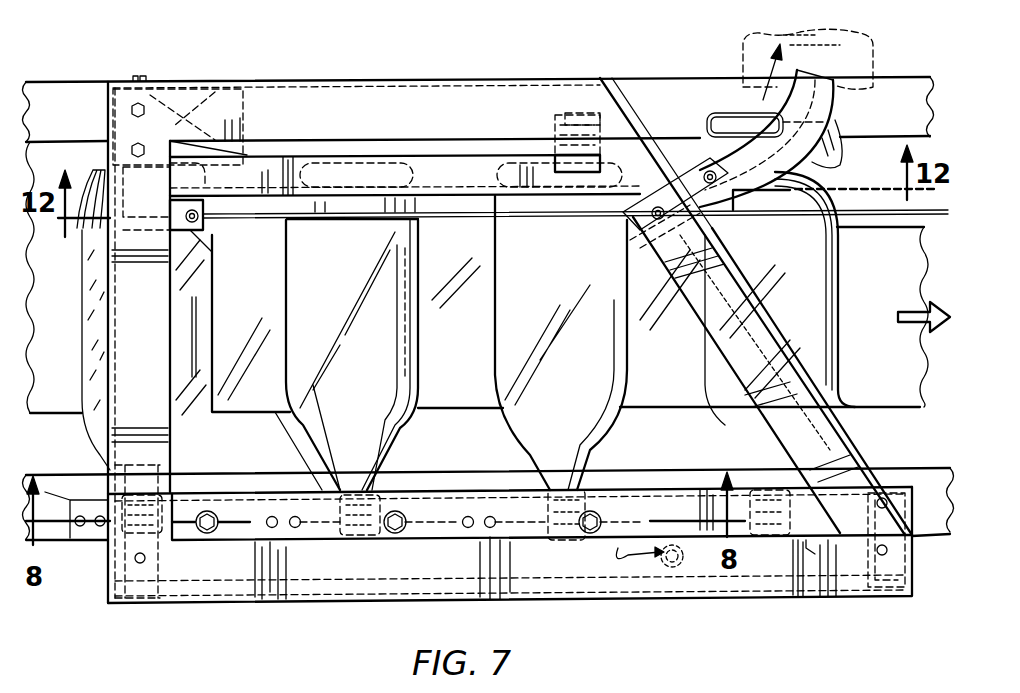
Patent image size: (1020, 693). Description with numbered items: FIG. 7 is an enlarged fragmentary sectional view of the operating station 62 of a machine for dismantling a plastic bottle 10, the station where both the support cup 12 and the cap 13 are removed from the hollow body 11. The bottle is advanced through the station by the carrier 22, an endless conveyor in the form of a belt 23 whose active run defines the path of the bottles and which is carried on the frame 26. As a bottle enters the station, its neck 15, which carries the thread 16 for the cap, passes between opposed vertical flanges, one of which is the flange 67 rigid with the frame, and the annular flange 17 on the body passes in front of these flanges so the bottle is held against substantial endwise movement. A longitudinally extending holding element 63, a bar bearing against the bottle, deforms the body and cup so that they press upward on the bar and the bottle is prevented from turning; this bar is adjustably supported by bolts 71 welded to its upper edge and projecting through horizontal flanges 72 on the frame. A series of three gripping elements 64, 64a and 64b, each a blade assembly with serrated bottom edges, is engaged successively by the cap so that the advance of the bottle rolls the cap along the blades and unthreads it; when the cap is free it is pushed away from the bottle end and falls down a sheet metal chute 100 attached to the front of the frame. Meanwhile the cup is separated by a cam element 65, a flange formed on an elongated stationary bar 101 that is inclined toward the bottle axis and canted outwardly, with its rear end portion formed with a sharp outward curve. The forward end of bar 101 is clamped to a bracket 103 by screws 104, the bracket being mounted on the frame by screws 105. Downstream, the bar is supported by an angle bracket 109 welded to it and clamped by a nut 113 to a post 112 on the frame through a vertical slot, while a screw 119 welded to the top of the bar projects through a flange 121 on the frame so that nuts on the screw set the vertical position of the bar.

The plastic bottle 10 is at (94, 428).
The hollow body 11 is at (90, 365).
The support cup 12 is at (90, 173).
The closure or cap 13 is at (162, 538).
The neck 15 is at (398, 462).
The thread 16 is at (810, 542).
The annular flange 17 is at (845, 468).
The carrier 22 is at (264, 414).
The belt 23 is at (912, 407).
The frame 26 is at (350, 80).
The station 62 is at (108, 152).
The holding element 63 is at (433, 222).
The gripping element 64 is at (226, 534).
The gripping element 64a is at (408, 533).
The gripping element 64b is at (622, 492).
The cam element 65 is at (295, 220).
The vertical flange 67 is at (285, 490).
The bolt 71 is at (205, 230).
The horizontal flange 72 is at (200, 205).
The sheet metal chute 100 is at (768, 597).
The stationary bar 101 is at (427, 158).
The bracket 103 is at (205, 89).
The screws 104 is at (182, 126).
The screws 105 is at (138, 75).
The angle bracket 109 is at (548, 153).
The post 112 is at (620, 100).
The nut 113 is at (573, 113).
The screw 119 is at (771, 138).
The flange 121 is at (707, 128).